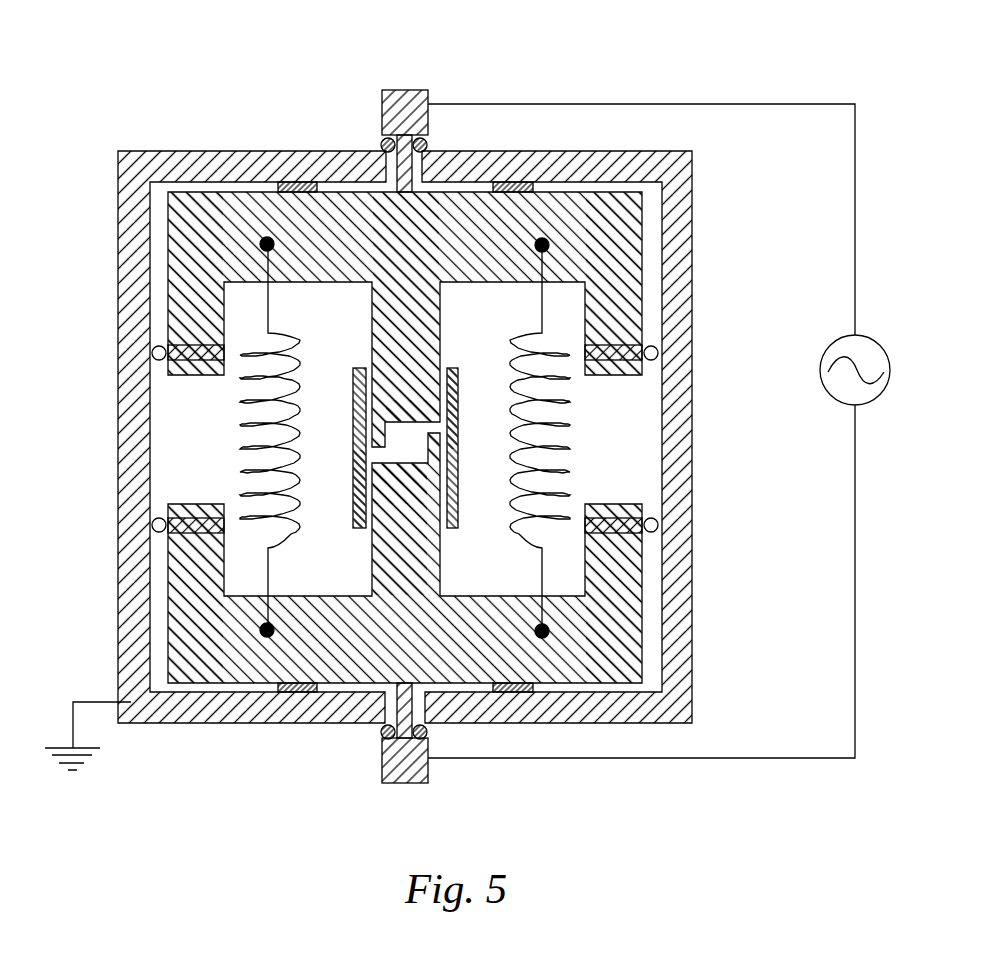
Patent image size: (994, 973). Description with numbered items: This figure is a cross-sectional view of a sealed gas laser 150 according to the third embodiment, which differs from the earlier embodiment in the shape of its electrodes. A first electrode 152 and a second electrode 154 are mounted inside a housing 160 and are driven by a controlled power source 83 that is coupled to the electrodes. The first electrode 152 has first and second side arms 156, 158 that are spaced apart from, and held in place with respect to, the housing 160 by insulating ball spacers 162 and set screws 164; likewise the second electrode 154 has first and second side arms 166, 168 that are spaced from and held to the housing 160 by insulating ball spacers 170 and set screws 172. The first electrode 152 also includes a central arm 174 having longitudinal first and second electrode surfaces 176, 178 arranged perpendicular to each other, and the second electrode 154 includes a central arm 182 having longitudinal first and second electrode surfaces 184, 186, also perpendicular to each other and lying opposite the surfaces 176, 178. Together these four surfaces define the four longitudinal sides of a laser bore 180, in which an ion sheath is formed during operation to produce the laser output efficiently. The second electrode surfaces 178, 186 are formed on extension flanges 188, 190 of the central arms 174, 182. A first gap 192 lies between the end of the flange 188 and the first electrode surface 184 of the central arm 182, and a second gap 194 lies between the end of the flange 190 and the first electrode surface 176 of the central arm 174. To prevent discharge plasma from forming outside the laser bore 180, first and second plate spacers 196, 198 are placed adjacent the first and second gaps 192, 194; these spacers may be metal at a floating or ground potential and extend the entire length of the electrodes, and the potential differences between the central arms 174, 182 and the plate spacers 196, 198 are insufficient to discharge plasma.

The gas laser 150 is at (757, 92).
The controlled power source 83 is at (823, 358).
The first electrode 152 is at (628, 252).
The second electrode 154 is at (633, 605).
The first side arm 156 is at (180, 293).
The second side arm 158 is at (628, 307).
The housing 160 is at (682, 318).
The insulating ball spacers 162 is at (155, 363).
The set screws 164 is at (193, 361).
The first side arm 166 is at (180, 558).
The second side arm 168 is at (628, 563).
The insulating ball spacers 170 is at (158, 520).
The set screws 172 is at (212, 519).
The central arm 174 is at (410, 290).
The first electrode surface 176 is at (425, 415).
The second electrode surface 178 is at (398, 413).
The laser bore 180 is at (410, 480).
The central arm 182 is at (425, 558).
The first electrode surface 184 is at (383, 463).
The second electrode surface 186 is at (432, 458).
The extension flange 188 is at (382, 415).
The extension flange 190 is at (434, 449).
The first gap 192 is at (358, 455).
The second gap 194 is at (450, 414).
The first plate spacer 196 is at (356, 418).
The second plate spacer 198 is at (452, 405).